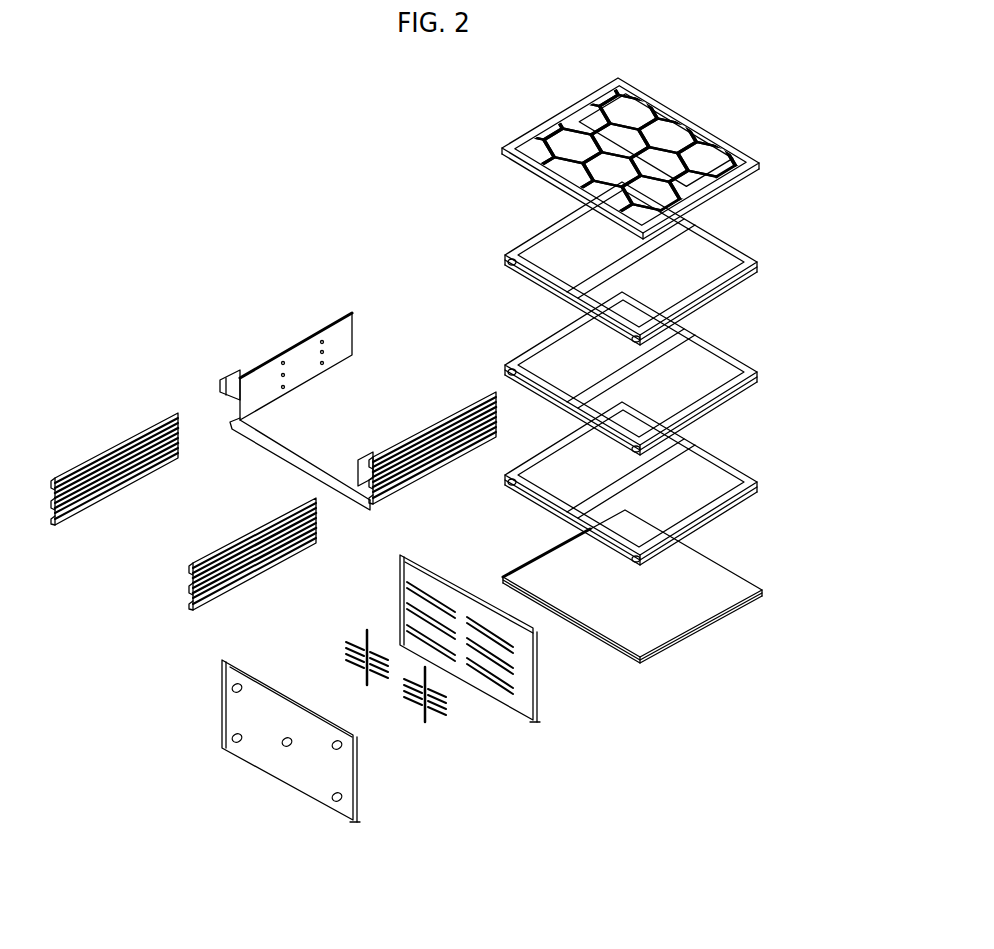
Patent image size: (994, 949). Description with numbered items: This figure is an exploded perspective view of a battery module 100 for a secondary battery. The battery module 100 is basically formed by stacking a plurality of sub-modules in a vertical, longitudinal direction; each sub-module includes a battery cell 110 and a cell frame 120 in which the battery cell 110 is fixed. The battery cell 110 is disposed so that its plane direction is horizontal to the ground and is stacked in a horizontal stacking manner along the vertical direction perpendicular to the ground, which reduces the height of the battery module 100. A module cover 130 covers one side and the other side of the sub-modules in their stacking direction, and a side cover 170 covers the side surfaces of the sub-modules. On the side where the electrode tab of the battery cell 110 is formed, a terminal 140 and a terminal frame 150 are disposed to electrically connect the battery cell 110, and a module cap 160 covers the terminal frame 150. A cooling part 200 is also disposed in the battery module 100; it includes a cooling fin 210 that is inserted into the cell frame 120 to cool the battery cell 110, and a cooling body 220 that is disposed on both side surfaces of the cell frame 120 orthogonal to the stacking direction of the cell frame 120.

The battery module 100 is at (284, 110).
The battery cell 110 is at (582, 232).
The cell frame 120 is at (502, 350).
The module cover 130 is at (545, 125).
The terminal 140 is at (448, 723).
The terminal frame 150 is at (537, 695).
The module cap 160 is at (343, 772).
The side cover 170 is at (97, 452).
The cooling part 200 is at (773, 827).
The cooling fin 210 is at (740, 287).
The cooling body 220 is at (278, 330).